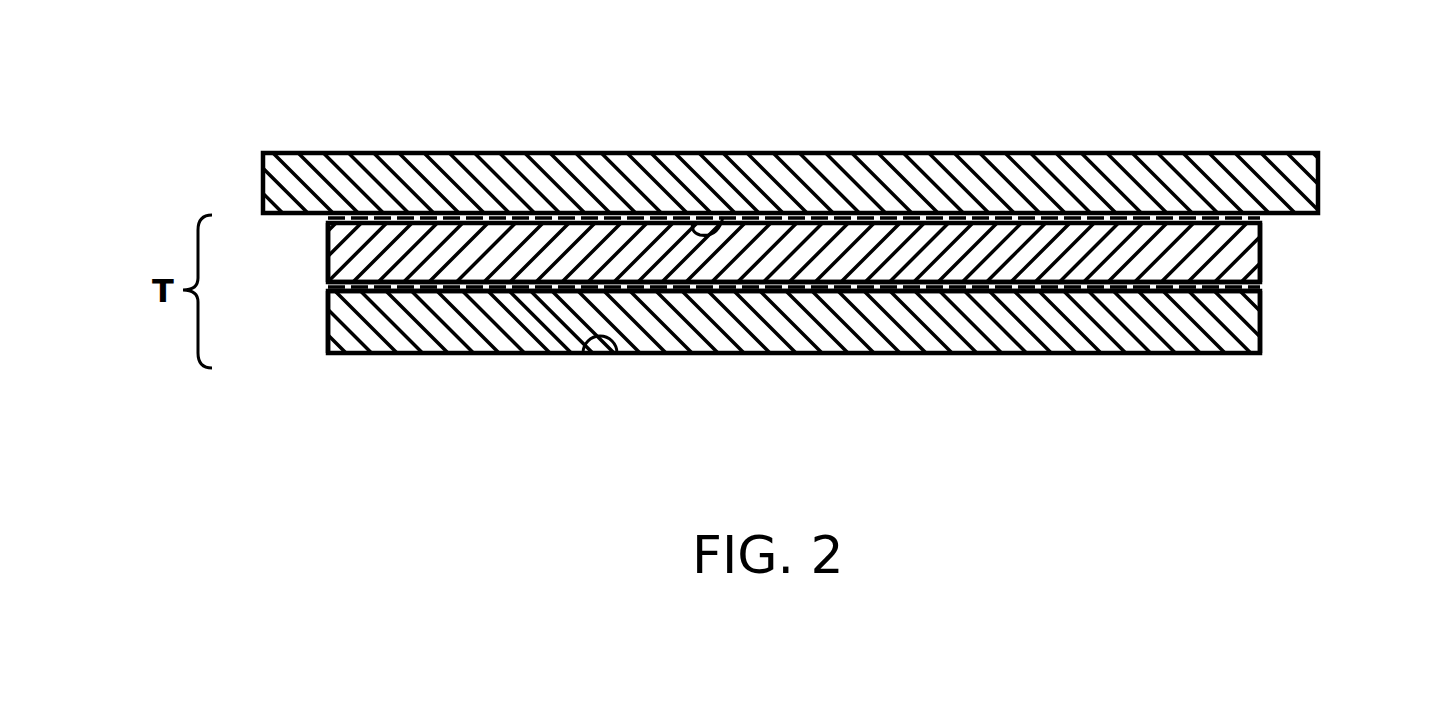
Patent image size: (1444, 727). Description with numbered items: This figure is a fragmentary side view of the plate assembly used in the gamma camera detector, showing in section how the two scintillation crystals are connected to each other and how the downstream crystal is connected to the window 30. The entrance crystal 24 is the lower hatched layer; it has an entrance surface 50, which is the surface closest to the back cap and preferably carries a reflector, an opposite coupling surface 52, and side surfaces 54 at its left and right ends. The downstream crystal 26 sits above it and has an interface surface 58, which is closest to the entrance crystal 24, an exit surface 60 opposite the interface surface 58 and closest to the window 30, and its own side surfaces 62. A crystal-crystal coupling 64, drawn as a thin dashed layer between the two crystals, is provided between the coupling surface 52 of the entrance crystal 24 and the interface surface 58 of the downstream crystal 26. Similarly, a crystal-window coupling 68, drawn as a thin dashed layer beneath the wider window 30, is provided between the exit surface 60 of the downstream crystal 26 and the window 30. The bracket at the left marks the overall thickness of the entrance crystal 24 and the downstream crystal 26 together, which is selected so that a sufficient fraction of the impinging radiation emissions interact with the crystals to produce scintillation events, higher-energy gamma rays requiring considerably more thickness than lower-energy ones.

The window 30 is at (303, 177).
The crystal-window coupling 68 is at (378, 207).
The downstream crystal 26 is at (917, 243).
The interface surface 58 is at (573, 287).
The exit surface 60 is at (723, 217).
The side surfaces 62 is at (327, 253).
The side surfaces 54 is at (327, 323).
The crystal-crystal coupling 64 is at (422, 290).
The entrance surface 50 is at (580, 352).
The entrance crystal 24 is at (753, 337).
The coupling surface 52 is at (1000, 290).